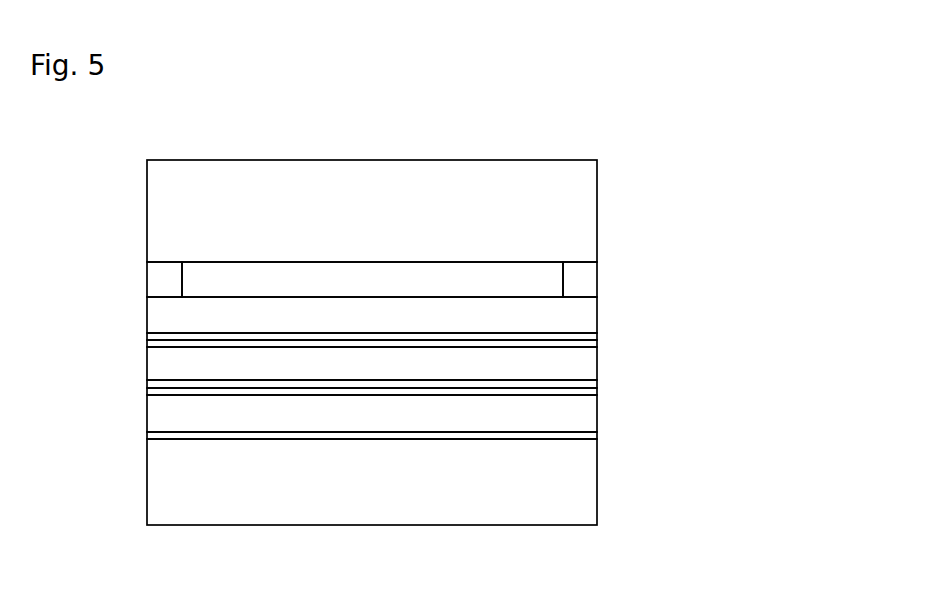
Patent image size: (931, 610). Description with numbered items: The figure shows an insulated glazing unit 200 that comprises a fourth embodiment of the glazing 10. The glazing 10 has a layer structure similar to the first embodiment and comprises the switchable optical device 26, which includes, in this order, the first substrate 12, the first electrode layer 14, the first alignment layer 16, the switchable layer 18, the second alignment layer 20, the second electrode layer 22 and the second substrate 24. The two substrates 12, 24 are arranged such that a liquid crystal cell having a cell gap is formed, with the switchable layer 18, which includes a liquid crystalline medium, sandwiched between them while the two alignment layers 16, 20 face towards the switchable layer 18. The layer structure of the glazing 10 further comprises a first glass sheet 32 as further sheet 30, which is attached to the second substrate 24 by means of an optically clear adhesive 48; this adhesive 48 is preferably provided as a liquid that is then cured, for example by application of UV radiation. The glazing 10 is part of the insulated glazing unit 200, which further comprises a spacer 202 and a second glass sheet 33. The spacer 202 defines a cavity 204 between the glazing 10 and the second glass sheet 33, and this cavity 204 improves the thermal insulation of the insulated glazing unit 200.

The insulated glazing unit 200 is at (360, 135).
The second glass sheet 33 is at (568, 188).
The cavity 204 is at (257, 280).
The spacer 202 is at (572, 280).
The first substrate 12 is at (572, 315).
The first electrode layer 14 is at (152, 333).
The first alignment layer 16 is at (575, 345).
The switchable layer 18 is at (160, 369).
The second alignment layer 20 is at (587, 383).
The second electrode layer 22 is at (163, 392).
The second substrate 24 is at (582, 422).
The optically clear adhesive 48 is at (152, 437).
The further sheet 30 is at (565, 494).
The first glass sheet 32 is at (439, 499).
The switchable optical device 26 is at (718, 363).
The glazing 10 is at (787, 422).